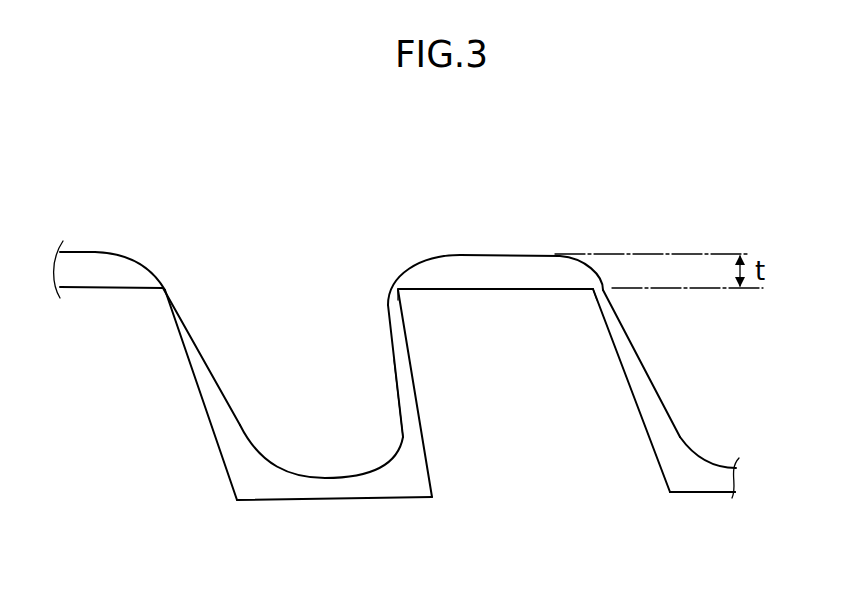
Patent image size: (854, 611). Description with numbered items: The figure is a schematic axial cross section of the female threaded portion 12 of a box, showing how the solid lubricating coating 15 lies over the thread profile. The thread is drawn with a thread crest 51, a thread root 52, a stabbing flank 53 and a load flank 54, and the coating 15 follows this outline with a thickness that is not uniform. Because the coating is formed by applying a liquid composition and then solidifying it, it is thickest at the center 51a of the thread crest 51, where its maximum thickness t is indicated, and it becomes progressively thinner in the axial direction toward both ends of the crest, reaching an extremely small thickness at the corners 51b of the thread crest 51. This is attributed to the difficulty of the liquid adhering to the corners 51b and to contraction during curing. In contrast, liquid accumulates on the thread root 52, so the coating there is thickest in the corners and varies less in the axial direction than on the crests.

The female threaded portion 12 is at (307, 356).
The solid lubricating coating 15 is at (403, 398).
The thread crest 51 is at (495, 306).
The center of the thread crest 51a is at (497, 284).
The corner of the thread crest 51b is at (412, 297).
The thread root 52 is at (486, 484).
The stabbing flank 53 is at (417, 394).
The load flank 54 is at (426, 393).